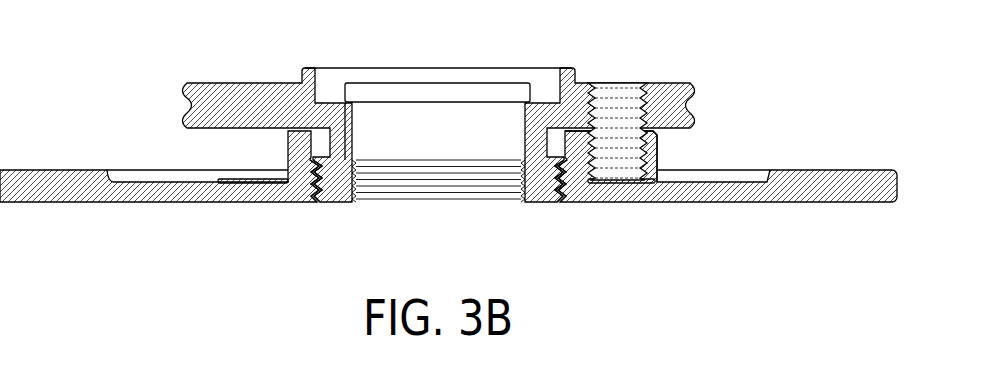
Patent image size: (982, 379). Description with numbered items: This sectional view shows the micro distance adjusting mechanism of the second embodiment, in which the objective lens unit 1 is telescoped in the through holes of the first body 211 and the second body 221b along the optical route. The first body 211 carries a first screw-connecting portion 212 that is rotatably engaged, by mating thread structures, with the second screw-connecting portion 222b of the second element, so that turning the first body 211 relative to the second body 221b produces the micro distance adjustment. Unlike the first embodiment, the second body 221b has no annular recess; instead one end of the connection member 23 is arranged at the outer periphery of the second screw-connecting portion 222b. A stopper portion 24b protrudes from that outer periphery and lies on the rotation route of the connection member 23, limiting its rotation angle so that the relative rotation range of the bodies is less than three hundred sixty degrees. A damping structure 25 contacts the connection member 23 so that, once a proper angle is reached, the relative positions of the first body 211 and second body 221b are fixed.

The objective lens unit 1 is at (427, 125).
The first body 211 is at (185, 103).
The first screw-connecting portion 212 is at (552, 190).
The second body 221b is at (822, 180).
The second screw-connecting portion 222b is at (561, 184).
The connection member 23 is at (618, 90).
The stopper portion 24b is at (655, 152).
The damping structure 25 is at (255, 185).